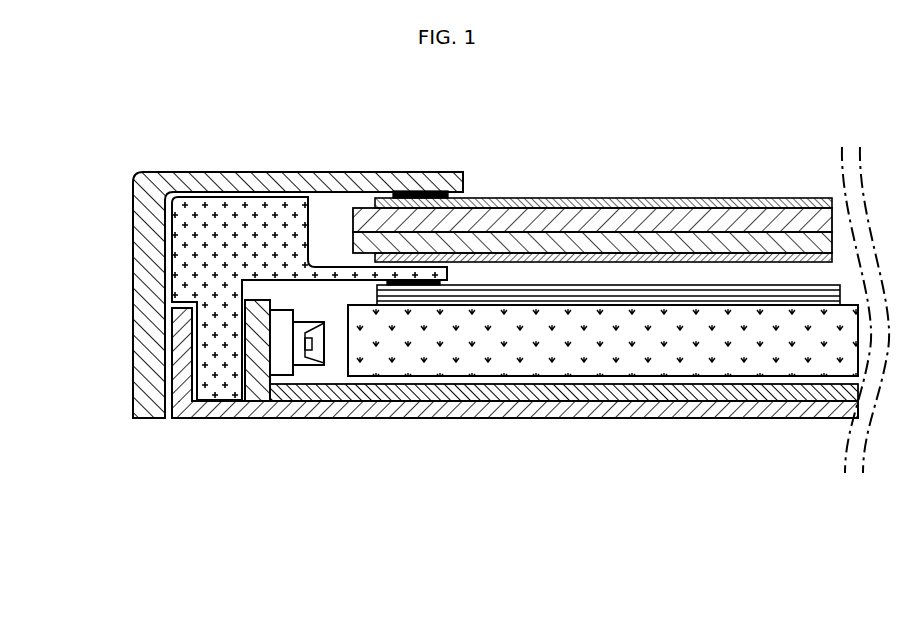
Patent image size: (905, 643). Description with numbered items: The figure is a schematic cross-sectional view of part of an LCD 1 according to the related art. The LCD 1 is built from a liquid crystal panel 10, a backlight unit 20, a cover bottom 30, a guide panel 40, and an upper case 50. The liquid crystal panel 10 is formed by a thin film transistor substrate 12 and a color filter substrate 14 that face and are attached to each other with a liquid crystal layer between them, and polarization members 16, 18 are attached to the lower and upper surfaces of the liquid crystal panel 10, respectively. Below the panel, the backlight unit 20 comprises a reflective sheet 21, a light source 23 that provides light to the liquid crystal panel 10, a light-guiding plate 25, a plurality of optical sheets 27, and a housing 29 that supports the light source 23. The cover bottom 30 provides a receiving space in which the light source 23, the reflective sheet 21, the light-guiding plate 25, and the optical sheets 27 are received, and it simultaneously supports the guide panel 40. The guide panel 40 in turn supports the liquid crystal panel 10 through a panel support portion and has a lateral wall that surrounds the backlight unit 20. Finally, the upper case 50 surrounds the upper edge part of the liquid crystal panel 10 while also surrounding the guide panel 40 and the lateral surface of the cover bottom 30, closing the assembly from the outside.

The LCD 1 is at (170, 144).
The liquid crystal panel 10 is at (553, 125).
The thin film transistor substrate 12 is at (655, 242).
The color filter substrate 14 is at (603, 232).
The polarization member 16 is at (708, 255).
The polarization member 18 is at (542, 198).
The backlight unit 20 is at (307, 533).
The reflective sheet 21 is at (700, 385).
The light source 23 is at (309, 378).
The light-guiding plate 25 is at (594, 352).
The optical sheets 27 is at (765, 292).
The housing 29 is at (463, 401).
The cover bottom 30 is at (183, 368).
The guide panel 40 is at (205, 262).
The upper case 50 is at (143, 207).